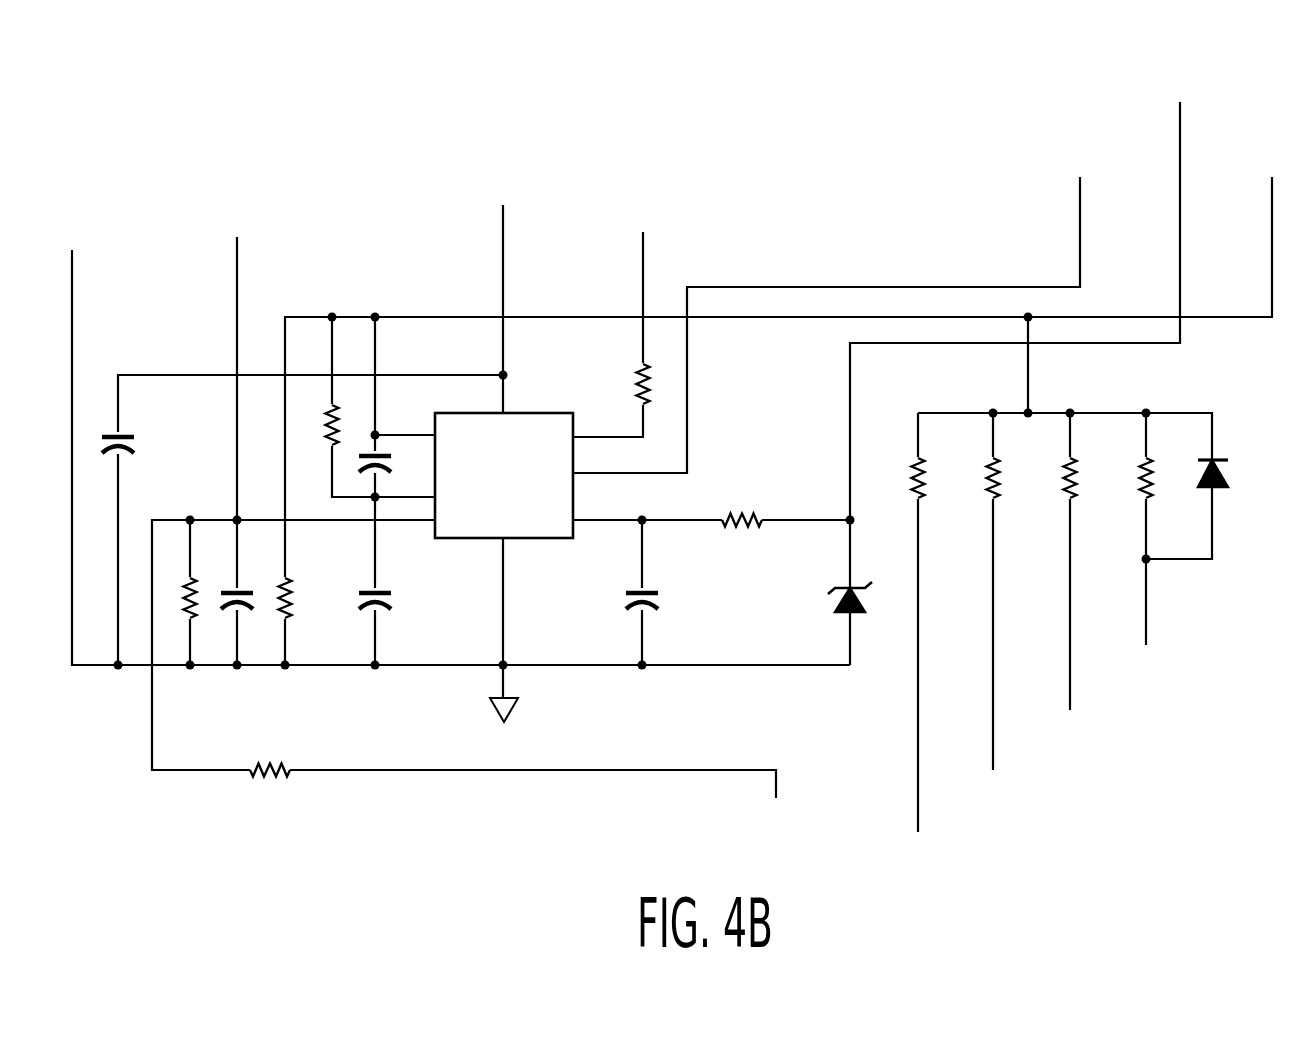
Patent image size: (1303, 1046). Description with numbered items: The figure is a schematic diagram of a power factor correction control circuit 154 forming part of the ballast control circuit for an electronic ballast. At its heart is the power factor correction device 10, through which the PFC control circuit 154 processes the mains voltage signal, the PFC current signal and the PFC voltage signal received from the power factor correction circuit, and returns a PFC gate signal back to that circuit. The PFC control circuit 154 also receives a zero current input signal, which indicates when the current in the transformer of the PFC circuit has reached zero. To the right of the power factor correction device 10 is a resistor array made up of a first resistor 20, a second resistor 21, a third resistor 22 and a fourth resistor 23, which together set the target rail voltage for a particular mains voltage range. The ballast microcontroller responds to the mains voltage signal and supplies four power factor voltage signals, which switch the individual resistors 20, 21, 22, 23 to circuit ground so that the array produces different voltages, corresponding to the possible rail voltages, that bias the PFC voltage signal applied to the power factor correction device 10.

The power factor correction control circuit 154 is at (604, 138).
The power factor correction U10 10 is at (504, 475).
The resistor R20 20 is at (895, 622).
The resistor R21 21 is at (972, 591).
The resistor R22 22 is at (1048, 561).
The resistor R23 23 is at (1124, 529).